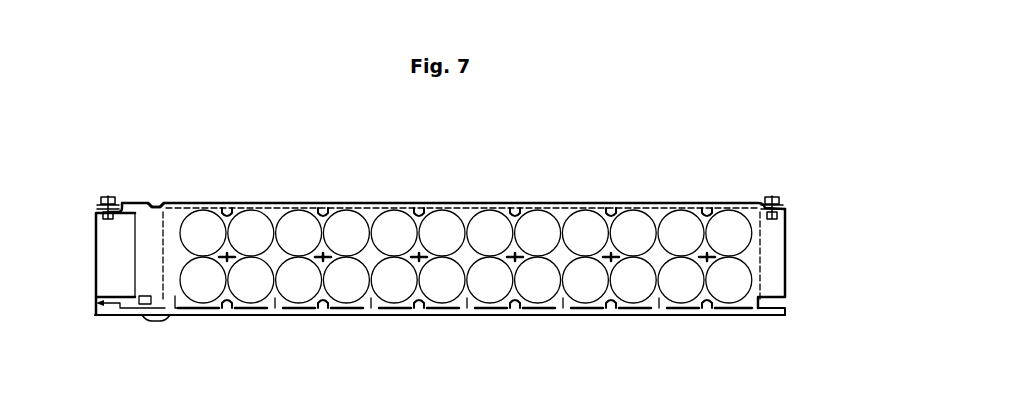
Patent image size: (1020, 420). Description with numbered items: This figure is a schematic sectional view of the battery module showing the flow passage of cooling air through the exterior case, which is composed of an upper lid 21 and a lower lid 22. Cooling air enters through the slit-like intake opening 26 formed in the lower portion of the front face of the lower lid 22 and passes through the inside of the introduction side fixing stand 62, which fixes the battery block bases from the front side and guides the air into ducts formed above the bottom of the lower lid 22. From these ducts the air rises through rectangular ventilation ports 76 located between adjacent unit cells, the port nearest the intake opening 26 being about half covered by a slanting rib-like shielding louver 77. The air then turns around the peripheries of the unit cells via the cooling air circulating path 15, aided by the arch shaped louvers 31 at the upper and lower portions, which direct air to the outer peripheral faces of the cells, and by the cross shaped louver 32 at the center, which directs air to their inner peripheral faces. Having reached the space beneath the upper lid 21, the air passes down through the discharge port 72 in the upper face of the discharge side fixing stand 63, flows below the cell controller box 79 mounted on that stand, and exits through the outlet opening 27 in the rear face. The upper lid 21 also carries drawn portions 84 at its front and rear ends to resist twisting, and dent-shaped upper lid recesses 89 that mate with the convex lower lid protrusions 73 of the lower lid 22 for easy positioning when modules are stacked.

The cooling air circulating path 15 is at (358, 257).
The upper lid 21 is at (503, 203).
The lower lid 22 is at (470, 316).
The intake opening 26 is at (785, 302).
The outlet opening 27 is at (97, 305).
The arch shaped louver 31 is at (690, 208).
The cross shaped louver 32 is at (612, 257).
The introduction side fixing stand 62 is at (767, 300).
The discharge side fixing stand 63 is at (150, 300).
The discharge port 72 is at (177, 308).
The lower lid protrusion 73 is at (155, 319).
The ventilation port 76 is at (650, 307).
The shielding louver 77 is at (705, 307).
The cell controller box 79 is at (102, 205).
The upper lid drawn portion 84 is at (112, 197).
The upper lid recess 89 is at (157, 205).